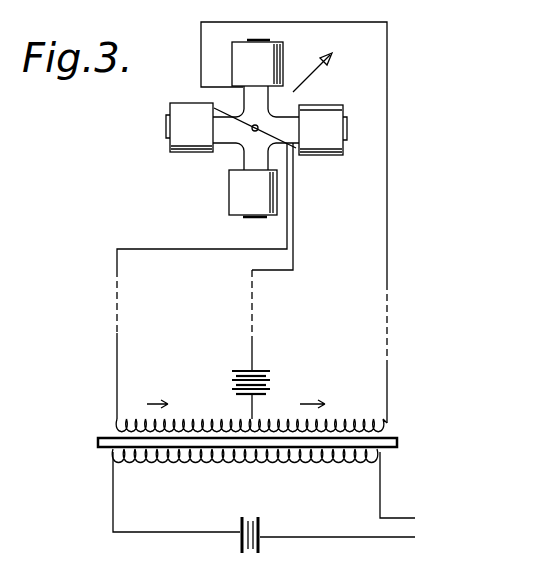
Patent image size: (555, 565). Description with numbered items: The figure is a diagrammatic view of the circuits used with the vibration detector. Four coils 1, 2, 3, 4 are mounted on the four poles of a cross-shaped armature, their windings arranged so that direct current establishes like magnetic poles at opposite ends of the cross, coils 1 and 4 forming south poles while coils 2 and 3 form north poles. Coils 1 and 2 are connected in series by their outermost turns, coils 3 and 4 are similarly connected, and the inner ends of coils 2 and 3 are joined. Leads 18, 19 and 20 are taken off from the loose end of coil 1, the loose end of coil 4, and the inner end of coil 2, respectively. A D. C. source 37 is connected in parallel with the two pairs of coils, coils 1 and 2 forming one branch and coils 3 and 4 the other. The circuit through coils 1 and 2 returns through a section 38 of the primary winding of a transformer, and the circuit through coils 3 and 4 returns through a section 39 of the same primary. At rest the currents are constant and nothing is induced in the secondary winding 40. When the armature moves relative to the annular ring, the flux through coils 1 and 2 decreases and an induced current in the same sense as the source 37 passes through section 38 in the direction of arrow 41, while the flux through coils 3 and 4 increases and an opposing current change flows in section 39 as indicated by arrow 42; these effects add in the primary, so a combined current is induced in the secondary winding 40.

The coil 1 is at (253, 204).
The coil 2 is at (177, 127).
The coil 3 is at (331, 130).
The coil 4 is at (257, 55).
The lead 18 is at (194, 252).
The lead 19 is at (280, 270).
The lead 20 is at (387, 240).
The D. C. source of current 37 is at (263, 370).
The section of primary winding 38 is at (228, 418).
The section of primary winding 39 is at (361, 422).
The secondary winding 40 is at (272, 464).
The arrow 41 is at (155, 397).
The arrow 42 is at (311, 395).